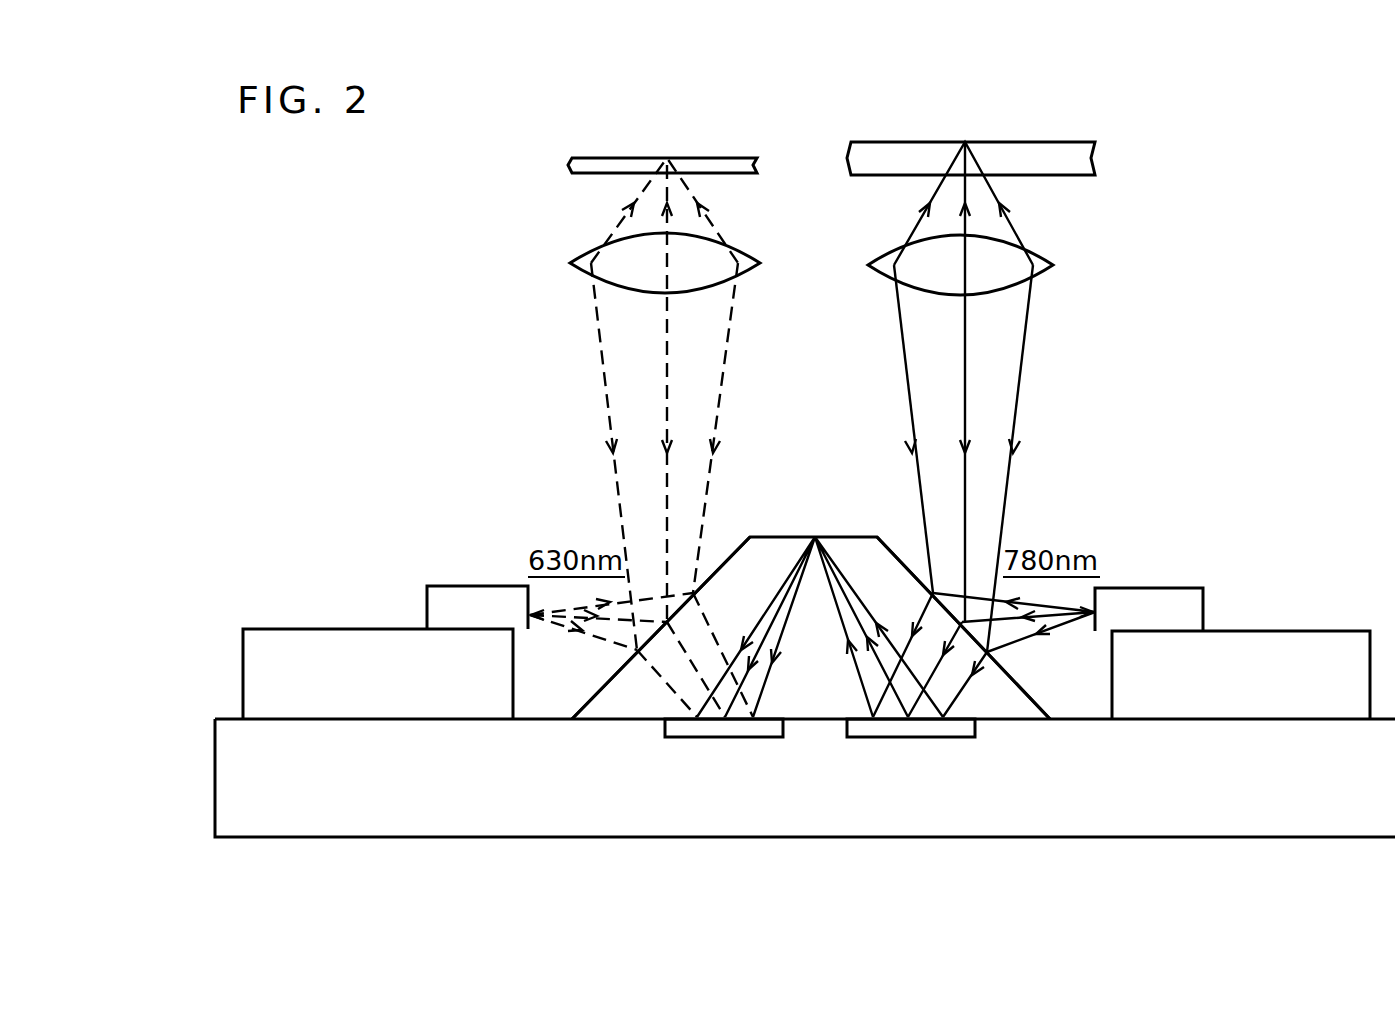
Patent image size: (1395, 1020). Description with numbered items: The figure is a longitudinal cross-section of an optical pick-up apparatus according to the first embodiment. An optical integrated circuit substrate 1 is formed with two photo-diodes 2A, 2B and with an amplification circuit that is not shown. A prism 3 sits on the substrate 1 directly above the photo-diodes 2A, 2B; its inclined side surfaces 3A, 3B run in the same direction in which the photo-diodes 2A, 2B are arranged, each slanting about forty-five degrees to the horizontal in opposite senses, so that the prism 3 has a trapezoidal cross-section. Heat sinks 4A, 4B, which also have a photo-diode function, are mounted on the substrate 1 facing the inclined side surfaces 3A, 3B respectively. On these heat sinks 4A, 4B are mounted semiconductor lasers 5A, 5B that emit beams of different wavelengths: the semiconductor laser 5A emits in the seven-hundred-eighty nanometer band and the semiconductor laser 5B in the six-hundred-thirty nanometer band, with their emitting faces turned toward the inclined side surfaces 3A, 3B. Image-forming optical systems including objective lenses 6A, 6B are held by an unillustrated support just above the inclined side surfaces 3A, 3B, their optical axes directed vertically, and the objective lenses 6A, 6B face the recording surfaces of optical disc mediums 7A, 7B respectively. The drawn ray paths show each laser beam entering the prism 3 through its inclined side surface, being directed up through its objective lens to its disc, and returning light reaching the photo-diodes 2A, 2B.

The optical integrated circuit substrate 1 is at (1118, 797).
The photo-diode 2A is at (900, 728).
The photo-diode 2B is at (712, 728).
The prism 3 is at (770, 553).
The inclined side surface 3A is at (1003, 660).
The inclined side surface 3B is at (628, 660).
The heat sink 4A is at (1290, 645).
The heat sink 4B is at (276, 643).
The semiconductor laser 5A is at (1140, 597).
The semiconductor laser 5B is at (473, 597).
The objective lens 6A is at (1053, 265).
The objective lens 6B is at (570, 263).
The optical disc medium 7A is at (1073, 160).
The optical disc medium 7B is at (588, 163).